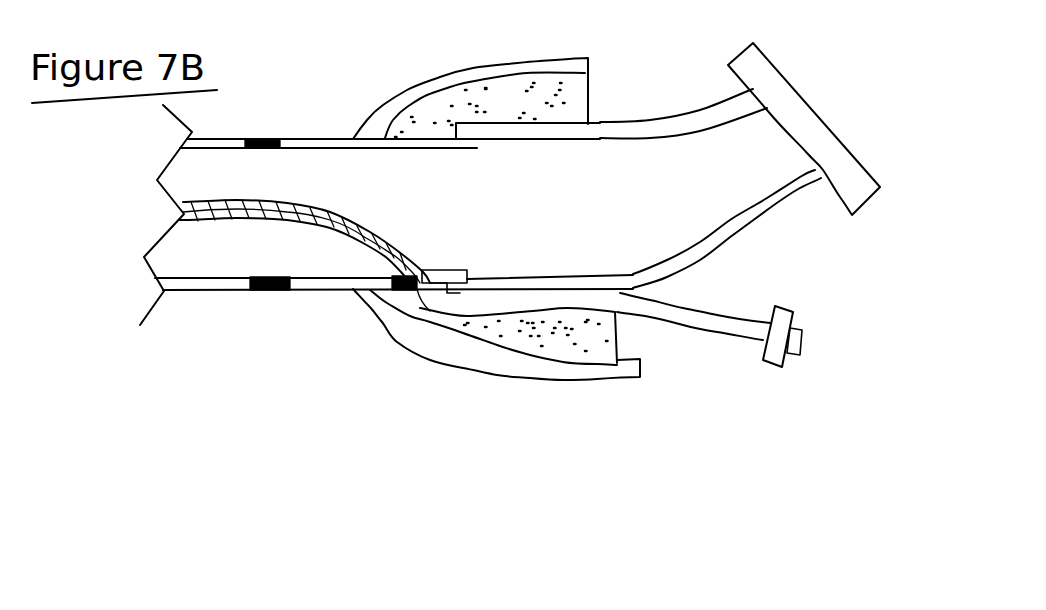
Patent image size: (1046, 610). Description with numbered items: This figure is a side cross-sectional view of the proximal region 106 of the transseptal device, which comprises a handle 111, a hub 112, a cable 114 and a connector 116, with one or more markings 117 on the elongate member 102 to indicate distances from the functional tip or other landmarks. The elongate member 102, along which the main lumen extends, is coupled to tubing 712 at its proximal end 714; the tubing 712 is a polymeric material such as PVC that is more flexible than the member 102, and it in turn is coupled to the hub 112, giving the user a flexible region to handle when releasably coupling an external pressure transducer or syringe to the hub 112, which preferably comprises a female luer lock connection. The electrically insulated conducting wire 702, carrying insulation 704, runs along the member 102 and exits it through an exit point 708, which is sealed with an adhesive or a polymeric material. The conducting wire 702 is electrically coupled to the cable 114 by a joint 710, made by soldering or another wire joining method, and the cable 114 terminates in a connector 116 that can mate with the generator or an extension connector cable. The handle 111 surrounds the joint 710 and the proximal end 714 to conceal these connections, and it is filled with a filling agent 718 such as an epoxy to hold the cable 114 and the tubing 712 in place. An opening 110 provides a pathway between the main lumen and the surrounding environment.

The elongate member 102 is at (330, 139).
The proximal region 106 is at (610, 475).
The opening 110 is at (197, 0).
The handle 111 is at (528, 74).
The hub 112 is at (818, 128).
The cable 114 is at (681, 308).
The connector 116 is at (775, 350).
The markings 117 is at (262, 139).
The conducting wire 702 is at (336, 226).
The insulation 704 is at (183, 219).
The exit point 708 is at (382, 230).
The joint 710 is at (415, 290).
The tubing 712 is at (706, 115).
The proximal end 714 is at (475, 148).
The filling agent 718 is at (563, 98).